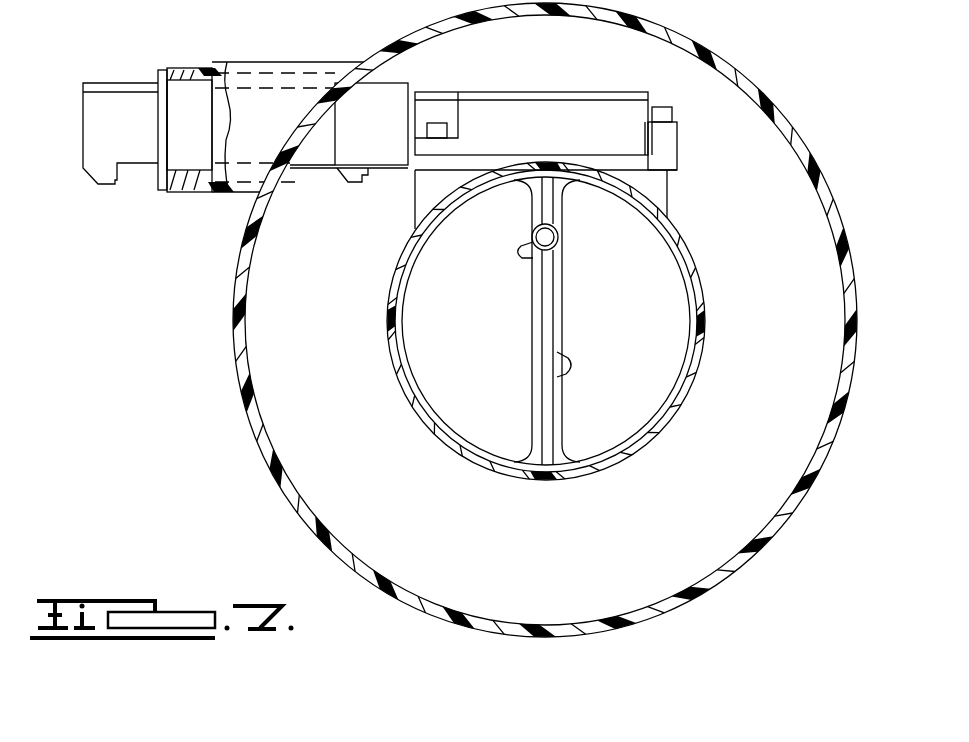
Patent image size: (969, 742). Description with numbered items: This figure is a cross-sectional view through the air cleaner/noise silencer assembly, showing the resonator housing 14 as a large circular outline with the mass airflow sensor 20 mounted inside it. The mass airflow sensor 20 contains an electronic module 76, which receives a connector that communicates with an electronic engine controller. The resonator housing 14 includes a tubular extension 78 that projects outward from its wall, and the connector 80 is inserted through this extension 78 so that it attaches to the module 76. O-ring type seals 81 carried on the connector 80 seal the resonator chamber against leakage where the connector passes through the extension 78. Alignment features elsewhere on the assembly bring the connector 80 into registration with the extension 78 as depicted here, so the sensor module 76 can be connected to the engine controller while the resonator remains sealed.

The resonator housing 14 is at (748, 560).
The mass airflow sensor 20 is at (683, 388).
The electronic module 76 is at (677, 137).
The tubular extension 78 is at (277, 63).
The connector 80 is at (108, 137).
The O-ring type seals 81 is at (183, 72).